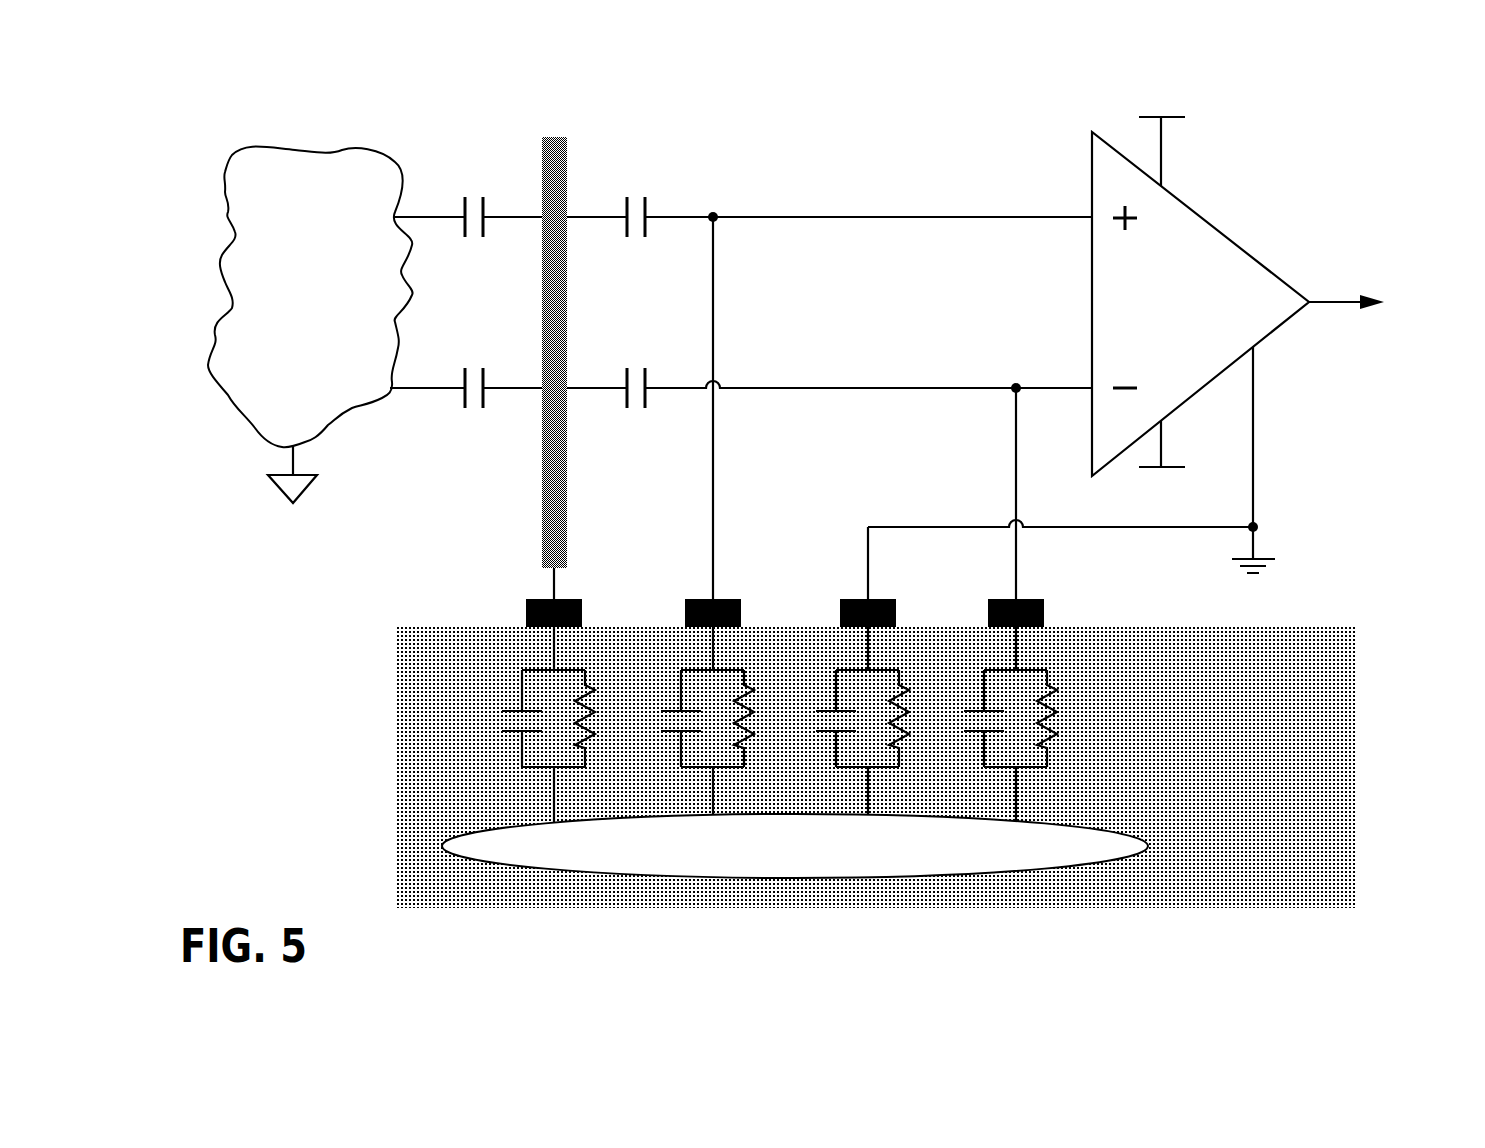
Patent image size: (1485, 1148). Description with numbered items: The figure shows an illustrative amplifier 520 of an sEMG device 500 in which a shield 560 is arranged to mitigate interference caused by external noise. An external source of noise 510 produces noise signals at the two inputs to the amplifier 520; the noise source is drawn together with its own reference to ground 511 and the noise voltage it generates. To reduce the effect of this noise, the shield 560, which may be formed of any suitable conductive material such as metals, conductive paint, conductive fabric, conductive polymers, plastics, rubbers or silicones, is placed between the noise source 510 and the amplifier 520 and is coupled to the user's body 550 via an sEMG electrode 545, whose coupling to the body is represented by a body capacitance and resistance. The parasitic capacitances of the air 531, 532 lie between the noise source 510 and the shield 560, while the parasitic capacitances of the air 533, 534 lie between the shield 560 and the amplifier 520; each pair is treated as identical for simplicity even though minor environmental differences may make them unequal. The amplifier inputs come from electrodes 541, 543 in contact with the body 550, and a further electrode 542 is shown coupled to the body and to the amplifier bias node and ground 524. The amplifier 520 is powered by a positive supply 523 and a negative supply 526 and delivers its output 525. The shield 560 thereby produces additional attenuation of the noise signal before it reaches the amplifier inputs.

The sEMG device 500 is at (196, 63).
The external source of noise 510 is at (310, 297).
The noise ground 511 is at (247, 498).
The amplifier 520 is at (1200, 304).
The positive supply voltage +VCC 523 is at (1210, 125).
The ground 524 is at (1281, 469).
The output Vout 525 is at (1373, 285).
The negative supply voltage -VCC 526 is at (1177, 461).
The parasitic capacitance of the air 531 is at (471, 223).
The parasitic capacitance of the air 532 is at (471, 394).
The parasitic capacitance of the air 533 is at (635, 223).
The parasitic capacitance of the air 534 is at (635, 394).
The electrode 541 is at (710, 690).
The bias electrode 542 is at (862, 690).
The electrode 543 is at (1011, 693).
The sEMG electrode 545 is at (551, 694).
The user's body 550 is at (876, 767).
The shield 560 is at (554, 336).